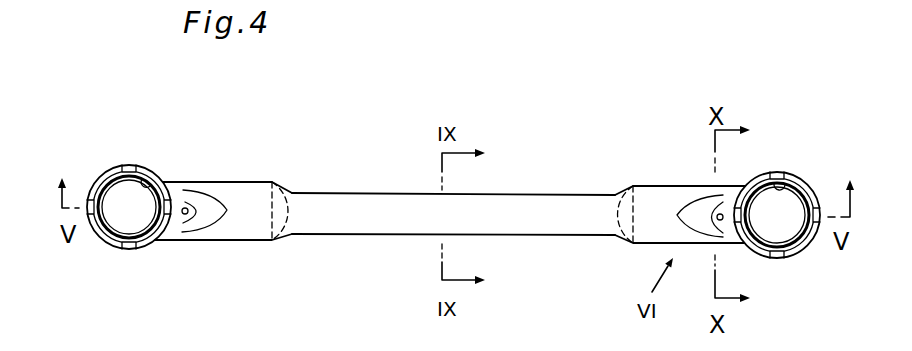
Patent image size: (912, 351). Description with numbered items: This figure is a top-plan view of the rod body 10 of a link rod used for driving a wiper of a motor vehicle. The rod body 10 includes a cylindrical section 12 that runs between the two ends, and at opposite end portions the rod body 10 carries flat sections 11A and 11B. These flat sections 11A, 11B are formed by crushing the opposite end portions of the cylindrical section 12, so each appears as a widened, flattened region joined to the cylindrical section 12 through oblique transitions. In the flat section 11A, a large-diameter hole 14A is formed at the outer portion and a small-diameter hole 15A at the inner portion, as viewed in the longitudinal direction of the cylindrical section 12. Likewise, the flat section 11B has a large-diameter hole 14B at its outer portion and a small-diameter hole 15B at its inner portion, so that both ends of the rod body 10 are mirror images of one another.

The rod body 10 is at (458, 204).
The cylindrical section 12 is at (527, 193).
The flat section 11A is at (90, 237).
The flat section 11B is at (813, 246).
The large-diameter hole 14A is at (153, 167).
The large-diameter hole 14B is at (797, 180).
The small-diameter hole 15A is at (188, 209).
The small-diameter hole 15B is at (717, 216).